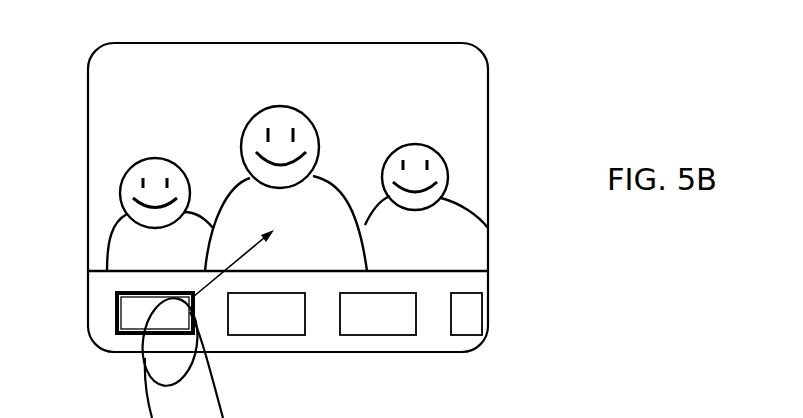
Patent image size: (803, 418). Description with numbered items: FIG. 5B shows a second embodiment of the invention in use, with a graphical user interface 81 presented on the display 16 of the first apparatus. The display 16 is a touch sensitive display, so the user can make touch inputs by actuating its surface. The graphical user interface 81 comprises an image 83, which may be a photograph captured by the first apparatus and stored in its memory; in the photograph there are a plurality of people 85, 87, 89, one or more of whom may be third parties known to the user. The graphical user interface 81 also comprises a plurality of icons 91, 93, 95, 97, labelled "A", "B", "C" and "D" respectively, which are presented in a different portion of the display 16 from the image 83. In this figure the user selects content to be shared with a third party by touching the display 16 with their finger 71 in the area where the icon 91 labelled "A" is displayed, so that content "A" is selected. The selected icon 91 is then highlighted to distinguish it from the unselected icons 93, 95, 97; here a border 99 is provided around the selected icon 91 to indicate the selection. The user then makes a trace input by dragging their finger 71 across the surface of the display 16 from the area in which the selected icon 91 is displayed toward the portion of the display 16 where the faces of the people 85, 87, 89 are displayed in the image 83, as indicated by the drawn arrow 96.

The graphical user interface 81 is at (488, 105).
The image 83 is at (440, 54).
The display 16 is at (489, 210).
The person 85 is at (108, 250).
The person 87 is at (340, 177).
The person 89 is at (460, 257).
The icon 91 is at (127, 337).
The icon 93 is at (265, 336).
The icon 95 is at (377, 336).
The icon 97 is at (468, 336).
The border 99 is at (115, 318).
The drag direction arrow 96 is at (276, 232).
The finger 71 is at (213, 386).